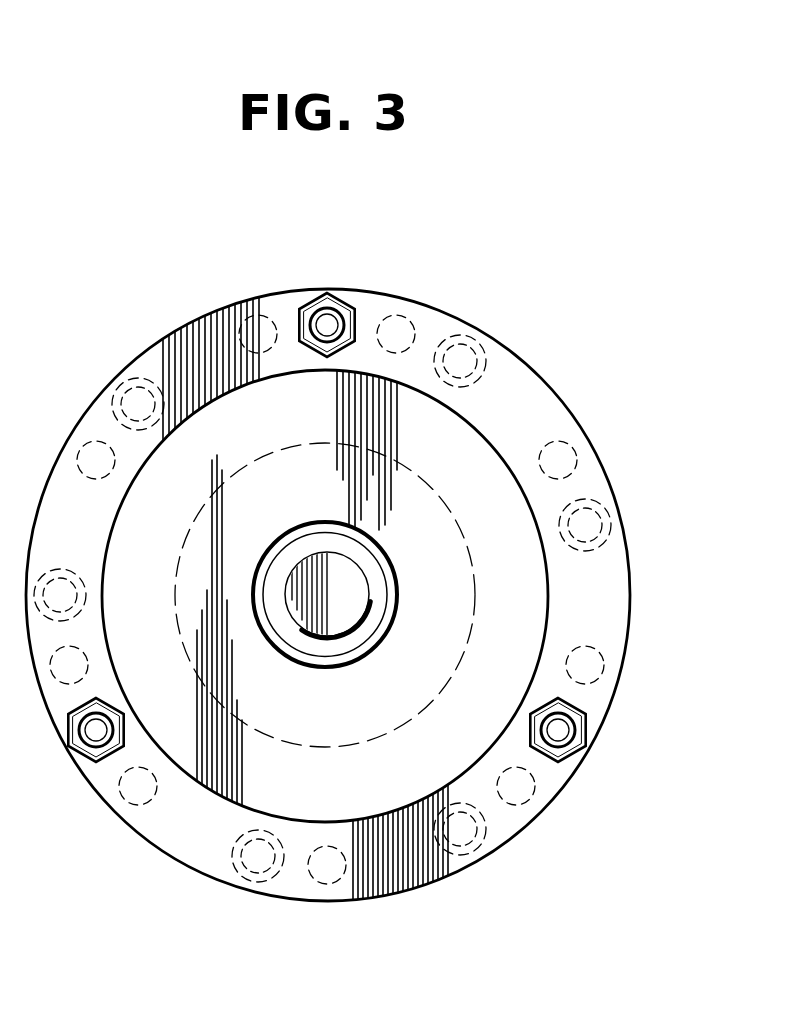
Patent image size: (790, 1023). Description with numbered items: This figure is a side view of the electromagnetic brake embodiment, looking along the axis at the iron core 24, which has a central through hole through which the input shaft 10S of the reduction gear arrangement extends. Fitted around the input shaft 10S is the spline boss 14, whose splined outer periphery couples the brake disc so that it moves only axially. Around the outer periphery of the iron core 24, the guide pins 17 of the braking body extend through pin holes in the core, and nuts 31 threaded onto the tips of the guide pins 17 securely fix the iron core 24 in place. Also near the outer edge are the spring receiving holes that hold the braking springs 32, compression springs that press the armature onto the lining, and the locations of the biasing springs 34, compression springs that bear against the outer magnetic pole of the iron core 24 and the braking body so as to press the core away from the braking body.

The iron core 24 is at (532, 361).
The nut 31 is at (584, 722).
The guide pin 17 is at (557, 732).
The braking spring 32 is at (445, 840).
The spline boss 14 is at (345, 873).
The biasing spring 34 is at (235, 850).
The input shaft 10S is at (302, 633).